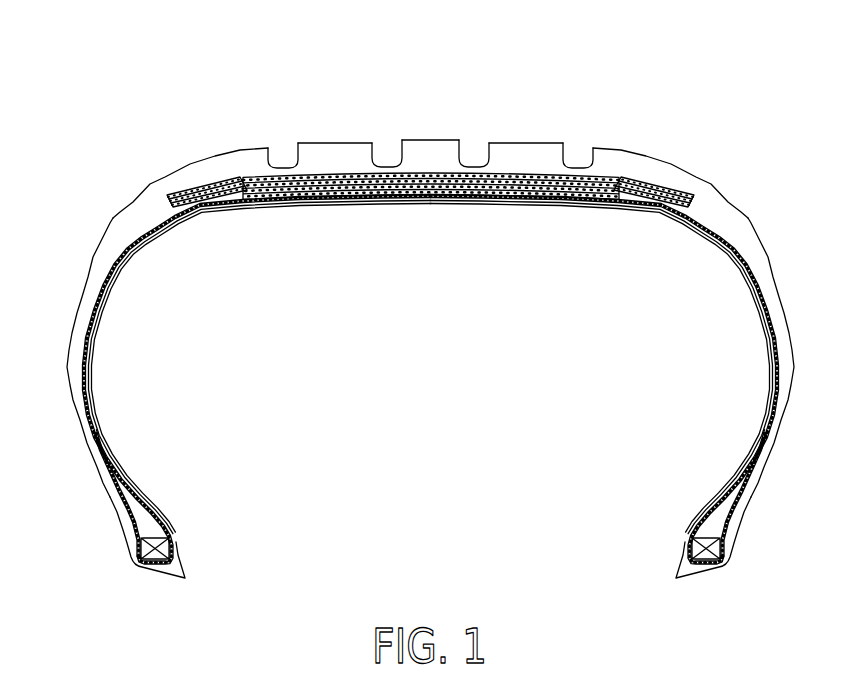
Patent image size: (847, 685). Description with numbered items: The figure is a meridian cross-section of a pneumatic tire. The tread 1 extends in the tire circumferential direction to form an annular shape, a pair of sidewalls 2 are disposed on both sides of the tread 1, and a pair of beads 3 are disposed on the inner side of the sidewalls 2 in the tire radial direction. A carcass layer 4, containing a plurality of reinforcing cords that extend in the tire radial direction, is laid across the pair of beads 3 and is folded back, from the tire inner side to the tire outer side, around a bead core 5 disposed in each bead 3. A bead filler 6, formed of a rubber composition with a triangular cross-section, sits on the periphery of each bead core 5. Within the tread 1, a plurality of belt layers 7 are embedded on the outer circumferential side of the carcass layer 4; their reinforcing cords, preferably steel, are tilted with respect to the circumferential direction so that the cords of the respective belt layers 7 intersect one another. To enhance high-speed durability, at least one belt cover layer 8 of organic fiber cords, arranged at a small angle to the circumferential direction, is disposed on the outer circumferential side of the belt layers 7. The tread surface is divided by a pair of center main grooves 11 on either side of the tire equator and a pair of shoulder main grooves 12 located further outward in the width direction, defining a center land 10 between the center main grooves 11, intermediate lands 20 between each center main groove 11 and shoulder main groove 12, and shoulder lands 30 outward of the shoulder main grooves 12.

The tread 1 is at (430, 134).
The sidewall 2 is at (83, 288).
The bead 3 is at (124, 541).
The carcass layer 4 is at (705, 225).
The bead core 5 is at (157, 547).
The bead filler 6 is at (140, 502).
The belt layer 7 is at (477, 192).
The belt cover layer 8 is at (197, 197).
The center land 10 is at (433, 152).
The center main groove 11 is at (400, 152).
The shoulder main groove 12 is at (289, 153).
The intermediate land 20 is at (335, 152).
The shoulder land 30 is at (237, 153).